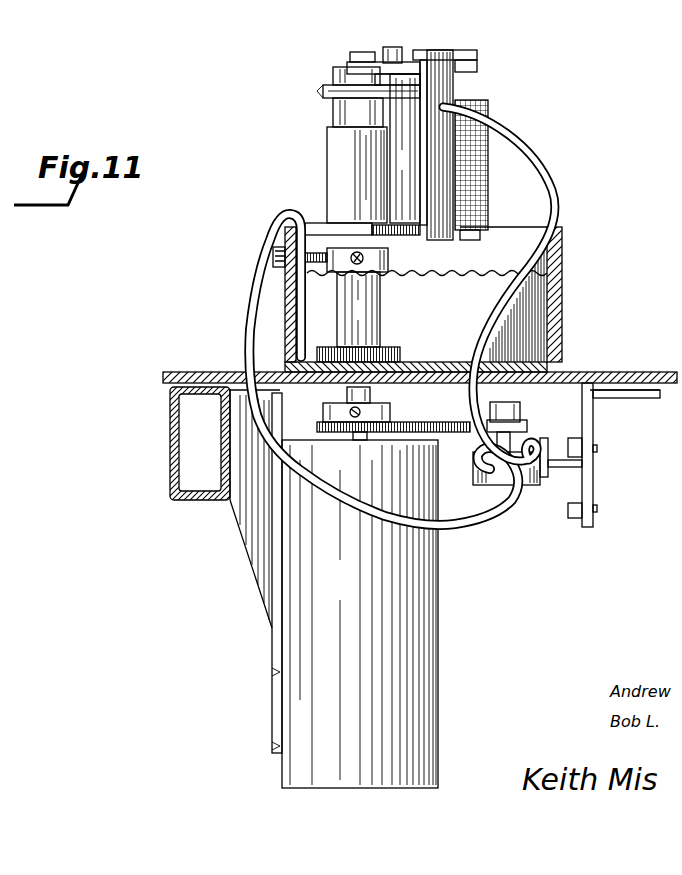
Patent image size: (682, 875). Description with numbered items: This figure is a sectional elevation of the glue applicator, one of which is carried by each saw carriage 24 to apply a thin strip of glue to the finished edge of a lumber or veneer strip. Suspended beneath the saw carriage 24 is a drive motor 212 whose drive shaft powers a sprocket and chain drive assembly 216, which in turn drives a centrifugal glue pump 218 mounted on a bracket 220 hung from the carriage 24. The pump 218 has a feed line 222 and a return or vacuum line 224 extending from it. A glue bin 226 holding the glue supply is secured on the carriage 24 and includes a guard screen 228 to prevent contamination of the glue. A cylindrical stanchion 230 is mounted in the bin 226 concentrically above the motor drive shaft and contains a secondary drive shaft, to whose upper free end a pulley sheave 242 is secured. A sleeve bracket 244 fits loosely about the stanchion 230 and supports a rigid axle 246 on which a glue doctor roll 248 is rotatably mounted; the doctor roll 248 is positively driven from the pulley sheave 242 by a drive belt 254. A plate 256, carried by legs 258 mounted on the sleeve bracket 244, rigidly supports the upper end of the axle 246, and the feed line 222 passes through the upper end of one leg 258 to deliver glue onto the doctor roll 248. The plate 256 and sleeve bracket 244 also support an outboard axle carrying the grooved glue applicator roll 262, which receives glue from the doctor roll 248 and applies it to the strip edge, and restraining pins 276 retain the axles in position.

The saw carriage 24 is at (170, 442).
The drive motor 212 is at (300, 643).
The sprocket and chain drive assembly 216 is at (437, 410).
The centrifugal glue pump 218 is at (533, 486).
The bracket 220 is at (590, 434).
The feed line 222 is at (487, 322).
The return or vacuum line 224 is at (250, 337).
The glue bin 226 is at (557, 336).
The guard screen 228 is at (461, 273).
The cylindrical stanchion 230 is at (370, 314).
The pulley sheave 242 is at (335, 75).
The sleeve bracket 244 is at (342, 173).
The rigid axle 246 is at (392, 47).
The glue doctor roll 248 is at (390, 108).
The drive belt 254 is at (323, 90).
The plate 256 is at (377, 48).
The legs 258 is at (448, 91).
The glue applicator roll 262 is at (487, 203).
The restraining pins 276 is at (468, 50).